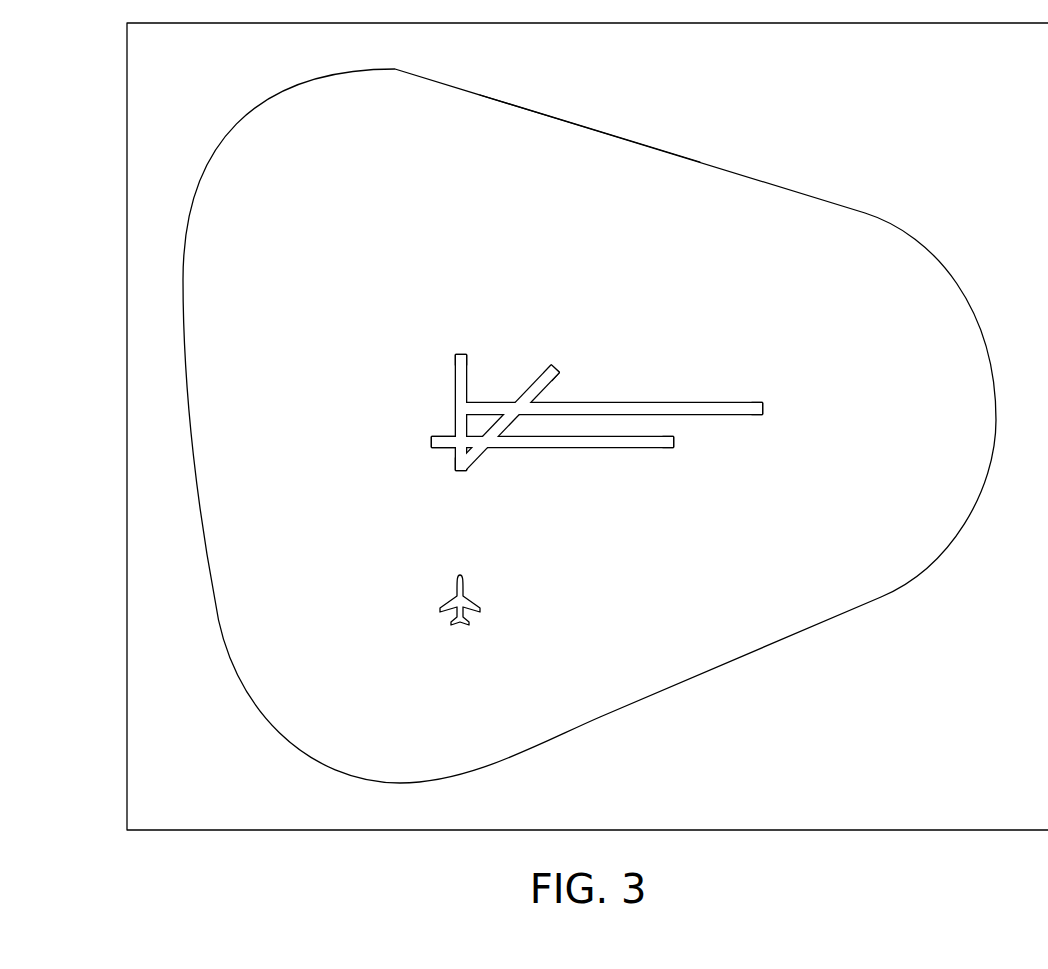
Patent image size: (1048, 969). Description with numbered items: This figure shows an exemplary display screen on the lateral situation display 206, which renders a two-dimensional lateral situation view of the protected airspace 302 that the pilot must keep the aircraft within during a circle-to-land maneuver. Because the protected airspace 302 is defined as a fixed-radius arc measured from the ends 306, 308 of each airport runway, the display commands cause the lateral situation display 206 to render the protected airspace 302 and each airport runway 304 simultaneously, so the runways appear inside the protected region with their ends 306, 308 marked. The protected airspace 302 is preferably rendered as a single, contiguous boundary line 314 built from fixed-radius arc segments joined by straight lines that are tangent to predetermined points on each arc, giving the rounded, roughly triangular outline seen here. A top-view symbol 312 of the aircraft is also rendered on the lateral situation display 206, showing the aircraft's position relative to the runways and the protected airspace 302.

The lateral situation display 206 is at (127, 77).
The protected airspace 302 is at (697, 160).
The airport runway 304 is at (456, 383).
The end 306 is at (463, 354).
The end 308 is at (432, 442).
The top-view symbol 312 is at (455, 588).
The boundary line 314 is at (575, 120).